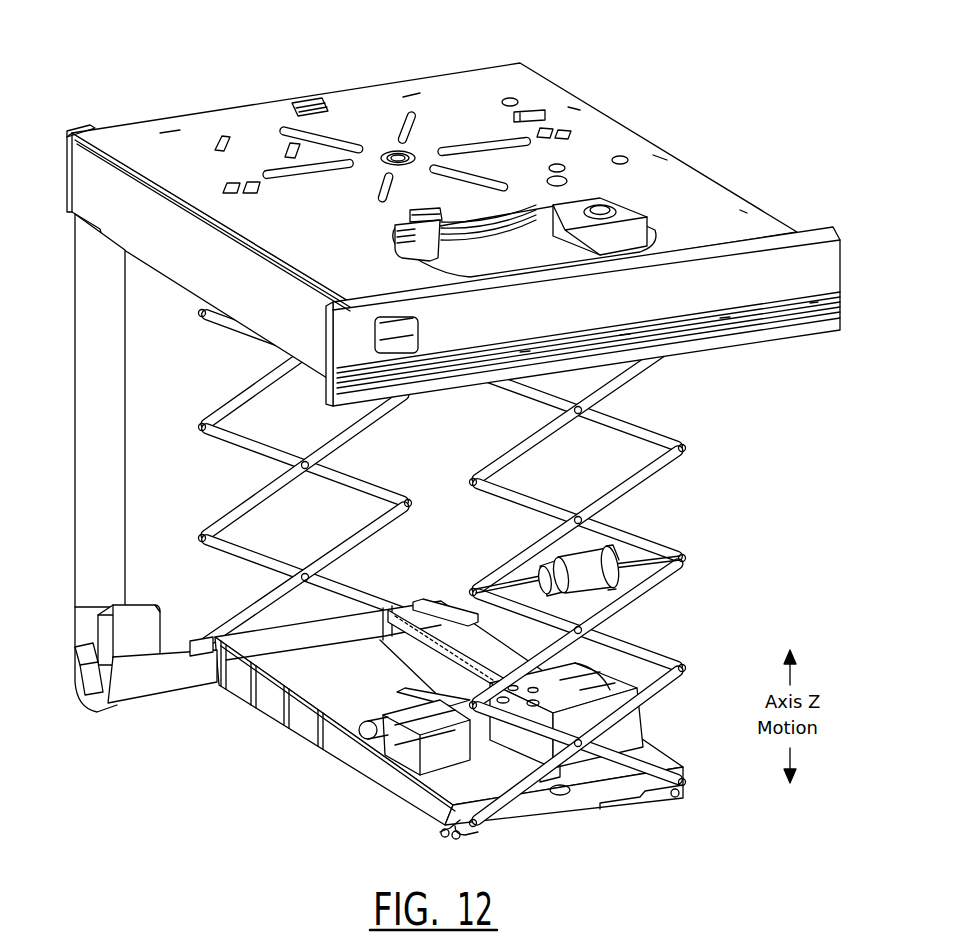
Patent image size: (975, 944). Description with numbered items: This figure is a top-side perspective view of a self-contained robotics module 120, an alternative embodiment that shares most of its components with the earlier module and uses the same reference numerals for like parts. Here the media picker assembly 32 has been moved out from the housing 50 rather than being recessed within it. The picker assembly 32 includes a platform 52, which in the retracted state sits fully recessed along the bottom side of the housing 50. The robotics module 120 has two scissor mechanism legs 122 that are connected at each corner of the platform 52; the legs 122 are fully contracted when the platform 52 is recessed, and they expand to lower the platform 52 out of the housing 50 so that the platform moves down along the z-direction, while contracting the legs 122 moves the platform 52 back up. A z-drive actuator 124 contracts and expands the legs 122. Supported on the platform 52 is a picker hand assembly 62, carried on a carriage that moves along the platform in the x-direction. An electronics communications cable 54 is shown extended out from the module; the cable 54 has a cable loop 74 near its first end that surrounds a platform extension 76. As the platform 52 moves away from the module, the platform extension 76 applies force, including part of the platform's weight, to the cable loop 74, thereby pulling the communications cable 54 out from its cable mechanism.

The self-contained robotics module 120 is at (688, 87).
The housing 50 is at (432, 98).
The electronics communications cable 54 is at (93, 553).
The picker assembly 32 is at (685, 515).
The scissor mechanism legs 122 is at (352, 477).
The z-drive actuator 124 is at (603, 578).
The picker hand assembly 62 is at (627, 735).
The platform 52 is at (368, 763).
The cable loop 74 is at (120, 713).
The platform extension 76 is at (72, 677).